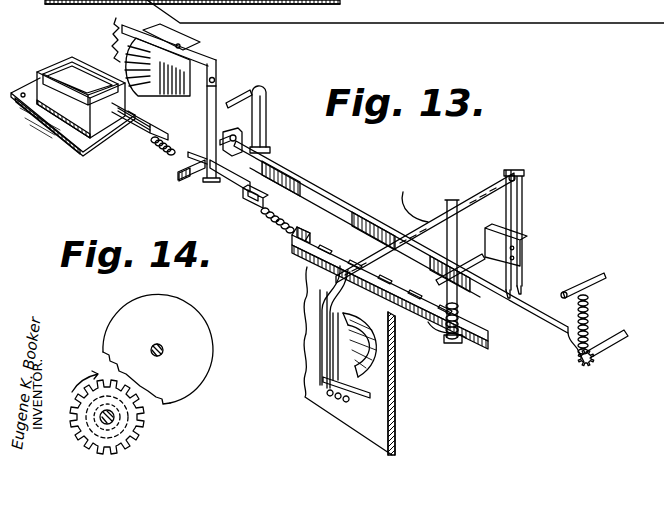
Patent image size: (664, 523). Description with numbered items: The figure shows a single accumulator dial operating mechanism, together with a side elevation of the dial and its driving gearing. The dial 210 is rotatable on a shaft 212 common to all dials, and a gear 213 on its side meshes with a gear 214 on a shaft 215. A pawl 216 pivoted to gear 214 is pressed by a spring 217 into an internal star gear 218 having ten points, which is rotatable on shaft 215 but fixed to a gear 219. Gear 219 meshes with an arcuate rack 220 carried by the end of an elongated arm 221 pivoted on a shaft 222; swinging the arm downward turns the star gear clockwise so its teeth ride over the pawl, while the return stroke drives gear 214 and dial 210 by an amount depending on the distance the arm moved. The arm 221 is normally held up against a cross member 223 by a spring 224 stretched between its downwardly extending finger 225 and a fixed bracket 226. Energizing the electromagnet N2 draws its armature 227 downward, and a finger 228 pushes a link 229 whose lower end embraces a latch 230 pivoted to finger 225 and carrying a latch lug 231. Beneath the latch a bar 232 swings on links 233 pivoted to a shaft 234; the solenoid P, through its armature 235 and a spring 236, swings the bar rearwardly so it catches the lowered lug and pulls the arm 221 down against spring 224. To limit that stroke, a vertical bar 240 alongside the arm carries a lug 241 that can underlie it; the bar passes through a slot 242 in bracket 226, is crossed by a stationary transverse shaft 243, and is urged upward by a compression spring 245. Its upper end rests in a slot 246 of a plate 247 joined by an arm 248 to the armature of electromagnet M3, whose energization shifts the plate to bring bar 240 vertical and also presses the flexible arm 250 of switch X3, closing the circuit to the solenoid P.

In FIG. 13, the solenoid P is at (67, 68).
In FIG. 13, the electromagnet N2 is at (148, 86).
In FIG. 13, the electromagnet M3 is at (358, 365).
In FIG. 13, the switch X3 is at (553, 209).
In FIG. 14, the dial 210 is at (144, 349).
In FIG. 14, the shaft 212 is at (164, 349).
In FIG. 14, the gear 213 is at (103, 357).
In FIG. 14, the gear 214 is at (138, 438).
In FIG. 13, the shaft 215 is at (626, 337).
In FIG. 14, the shaft 215 is at (103, 422).
In FIG. 14, the pawl 216 is at (75, 398).
In FIG. 14, the spring 217 is at (132, 420).
In FIG. 14, the internal star gear 218 is at (122, 447).
In FIG. 13, the gear 219 is at (597, 366).
In FIG. 13, the arcuate rack 220 is at (590, 308).
In FIG. 13, the elongated arm 221 is at (334, 196).
In FIG. 13, the shaft 222 is at (225, 138).
In FIG. 13, the cross member 223 is at (600, 278).
In FIG. 13, the spring 224 is at (270, 222).
In FIG. 13, the finger 225 is at (252, 182).
In FIG. 13, the bracket 226 is at (305, 252).
In FIG. 13, the armature 227 is at (188, 38).
In FIG. 13, the finger 228 is at (210, 63).
In FIG. 13, the link 229 is at (206, 124).
In FIG. 13, the latch 230 is at (230, 188).
In FIG. 13, the latch lug 231 is at (194, 150).
In FIG. 13, the bar 232 is at (181, 180).
In FIG. 13, the links 233 is at (267, 108).
In FIG. 13, the shaft 234 is at (244, 92).
In FIG. 13, the armature 235 is at (140, 136).
In FIG. 13, the spring 236 is at (158, 150).
In FIG. 13, the vertical bar 240 is at (458, 222).
In FIG. 13, the lug 241 is at (463, 310).
In FIG. 13, the slot 242 is at (428, 324).
In FIG. 13, the transverse shaft 243 is at (478, 255).
In FIG. 13, the compression spring 245 is at (452, 345).
In FIG. 13, the slot 246 is at (472, 203).
In FIG. 13, the plate 247 is at (488, 175).
In FIG. 13, the arm 248 is at (327, 297).
In FIG. 13, the flexible arm 250 is at (516, 178).